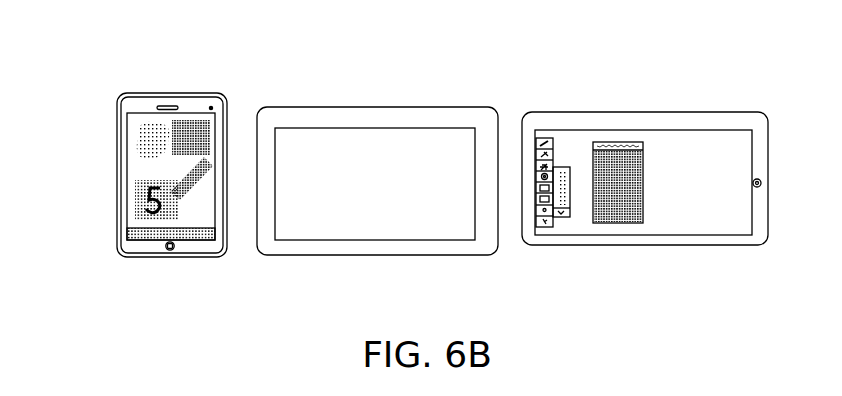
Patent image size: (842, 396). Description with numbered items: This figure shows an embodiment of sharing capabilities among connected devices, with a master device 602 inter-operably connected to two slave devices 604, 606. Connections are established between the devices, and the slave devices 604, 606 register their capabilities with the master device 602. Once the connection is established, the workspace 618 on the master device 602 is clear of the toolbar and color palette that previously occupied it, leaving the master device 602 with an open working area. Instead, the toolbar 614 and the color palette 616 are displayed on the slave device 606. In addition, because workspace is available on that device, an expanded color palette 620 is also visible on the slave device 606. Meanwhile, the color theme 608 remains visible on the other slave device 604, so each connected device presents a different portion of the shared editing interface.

The master device 602 is at (335, 106).
The slave device 604 is at (171, 92).
The slave device 606 is at (614, 112).
The color theme 608 is at (137, 135).
The toolbar 614 is at (543, 228).
The color palette 616 is at (560, 218).
The workspace 618 is at (402, 187).
The expanded color palette 620 is at (645, 185).